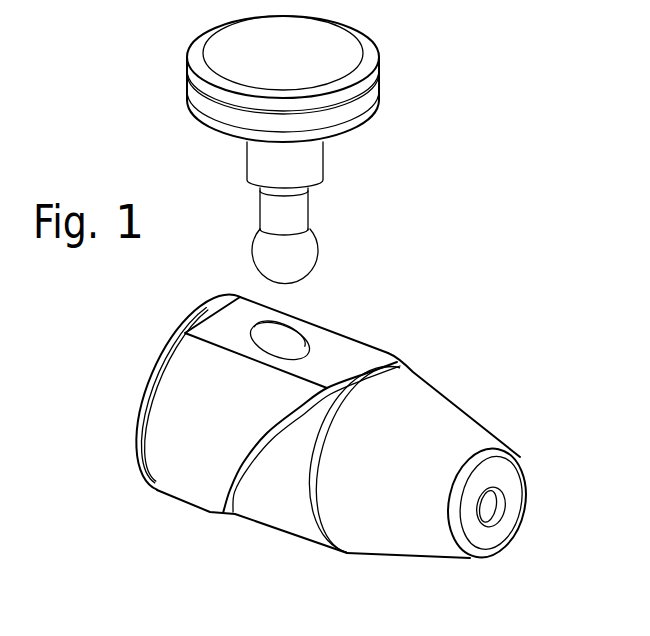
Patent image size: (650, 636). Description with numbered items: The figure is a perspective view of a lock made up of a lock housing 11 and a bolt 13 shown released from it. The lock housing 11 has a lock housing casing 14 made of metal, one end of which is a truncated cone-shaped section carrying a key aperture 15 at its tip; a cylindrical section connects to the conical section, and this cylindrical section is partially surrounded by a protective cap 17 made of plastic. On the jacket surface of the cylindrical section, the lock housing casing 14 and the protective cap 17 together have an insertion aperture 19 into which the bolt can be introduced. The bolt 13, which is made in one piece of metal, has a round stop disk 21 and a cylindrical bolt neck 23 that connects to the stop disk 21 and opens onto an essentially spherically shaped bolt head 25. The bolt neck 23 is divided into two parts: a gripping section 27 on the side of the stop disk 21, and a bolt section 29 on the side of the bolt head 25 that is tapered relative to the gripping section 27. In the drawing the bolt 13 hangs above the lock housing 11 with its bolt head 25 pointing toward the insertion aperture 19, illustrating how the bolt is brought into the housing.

The lock housing 11 is at (421, 355).
The bolt 13 is at (317, 71).
The lock housing casing 14 is at (445, 421).
The key aperture 15 is at (500, 509).
The protective cap 17 is at (165, 420).
The insertion aperture 19 is at (300, 338).
The stop disk 21 is at (228, 42).
The bolt neck 23 is at (252, 190).
The bolt head 25 is at (268, 250).
The gripping section 27 is at (305, 163).
The bolt section 29 is at (297, 210).